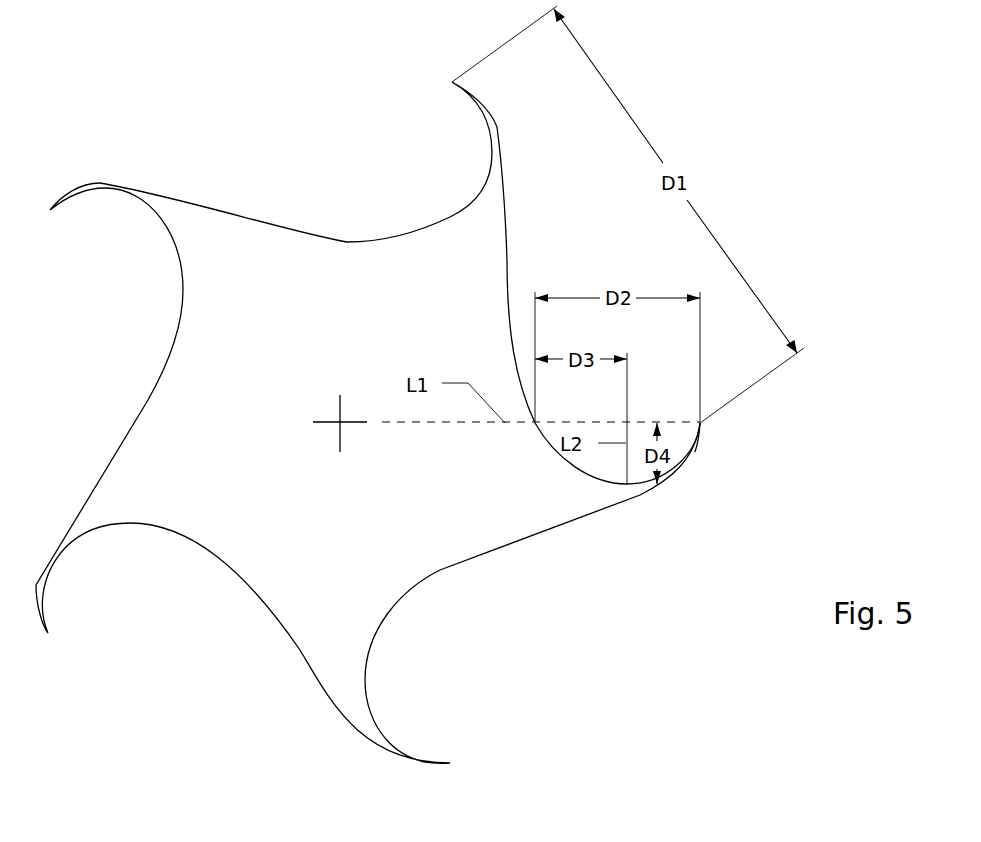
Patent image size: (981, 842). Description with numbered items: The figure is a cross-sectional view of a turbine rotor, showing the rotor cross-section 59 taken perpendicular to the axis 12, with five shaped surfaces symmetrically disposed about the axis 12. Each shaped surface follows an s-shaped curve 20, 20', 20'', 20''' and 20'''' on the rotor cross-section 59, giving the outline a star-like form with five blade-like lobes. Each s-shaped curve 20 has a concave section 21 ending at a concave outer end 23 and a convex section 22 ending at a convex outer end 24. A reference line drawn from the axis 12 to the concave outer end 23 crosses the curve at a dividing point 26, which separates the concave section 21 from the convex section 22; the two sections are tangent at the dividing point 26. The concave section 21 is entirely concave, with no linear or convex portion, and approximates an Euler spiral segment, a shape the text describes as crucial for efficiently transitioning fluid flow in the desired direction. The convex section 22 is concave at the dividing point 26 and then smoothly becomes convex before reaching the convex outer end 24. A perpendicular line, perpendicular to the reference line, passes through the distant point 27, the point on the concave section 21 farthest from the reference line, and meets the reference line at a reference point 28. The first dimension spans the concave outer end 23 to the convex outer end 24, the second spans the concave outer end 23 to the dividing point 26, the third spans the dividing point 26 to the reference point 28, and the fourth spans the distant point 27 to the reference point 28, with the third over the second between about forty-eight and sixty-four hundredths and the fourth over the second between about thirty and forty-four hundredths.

The axis 12 is at (340, 420).
The s-shaped curve 20 is at (562, 303).
The s-shaped curve 20' is at (451, 666).
The s-shaped curve 20'' is at (168, 529).
The s-shaped curve 20''' is at (105, 291).
The s-shaped curve 20'''' is at (275, 188).
The concave section 21 is at (565, 462).
The convex section 22 is at (498, 127).
The concave outer end 23 is at (700, 423).
The convex outer end 24 is at (452, 82).
The dividing point 26 is at (532, 423).
The distant point 27 is at (640, 486).
The reference point 28 is at (627, 418).
The rotor cross-section 59 is at (577, 578).